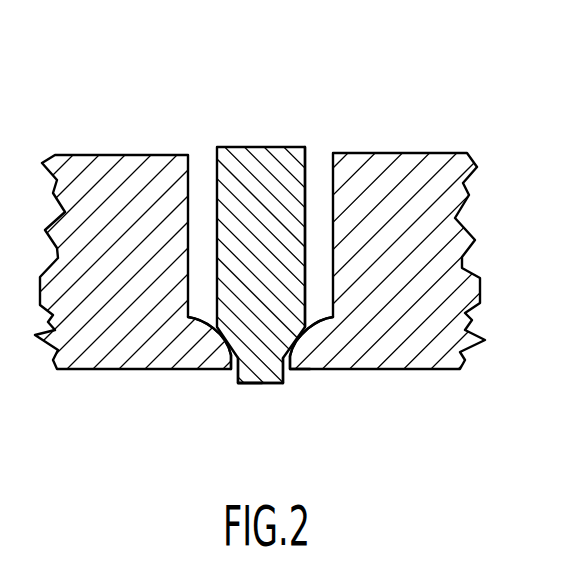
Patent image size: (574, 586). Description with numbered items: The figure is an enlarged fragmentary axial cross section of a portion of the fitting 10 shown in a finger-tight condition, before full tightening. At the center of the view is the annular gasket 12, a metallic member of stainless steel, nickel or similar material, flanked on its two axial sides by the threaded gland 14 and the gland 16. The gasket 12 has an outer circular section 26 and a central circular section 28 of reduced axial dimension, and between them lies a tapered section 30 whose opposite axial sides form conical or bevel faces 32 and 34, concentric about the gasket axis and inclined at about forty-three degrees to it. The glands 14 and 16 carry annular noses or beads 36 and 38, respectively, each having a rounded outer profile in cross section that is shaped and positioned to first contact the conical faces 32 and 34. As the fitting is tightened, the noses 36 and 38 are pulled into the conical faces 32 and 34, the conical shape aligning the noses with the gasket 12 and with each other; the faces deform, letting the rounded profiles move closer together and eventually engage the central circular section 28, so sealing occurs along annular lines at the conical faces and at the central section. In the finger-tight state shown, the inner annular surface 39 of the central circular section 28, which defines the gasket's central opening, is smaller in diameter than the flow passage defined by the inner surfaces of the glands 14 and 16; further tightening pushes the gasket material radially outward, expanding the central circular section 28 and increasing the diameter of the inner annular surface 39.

The fitting 10 is at (145, 56).
The annular gasket 12 is at (251, 147).
The threaded gland 14 is at (98, 160).
The gland 16 is at (425, 160).
The outer circular section 26 is at (307, 168).
The central circular section 28 is at (270, 384).
The tapered section 30 is at (287, 371).
The conical face 32 is at (210, 331).
The conical face 34 is at (298, 348).
The annular nose 36 is at (234, 352).
The annular nose 38 is at (305, 370).
The inner annular surface 39 is at (253, 385).